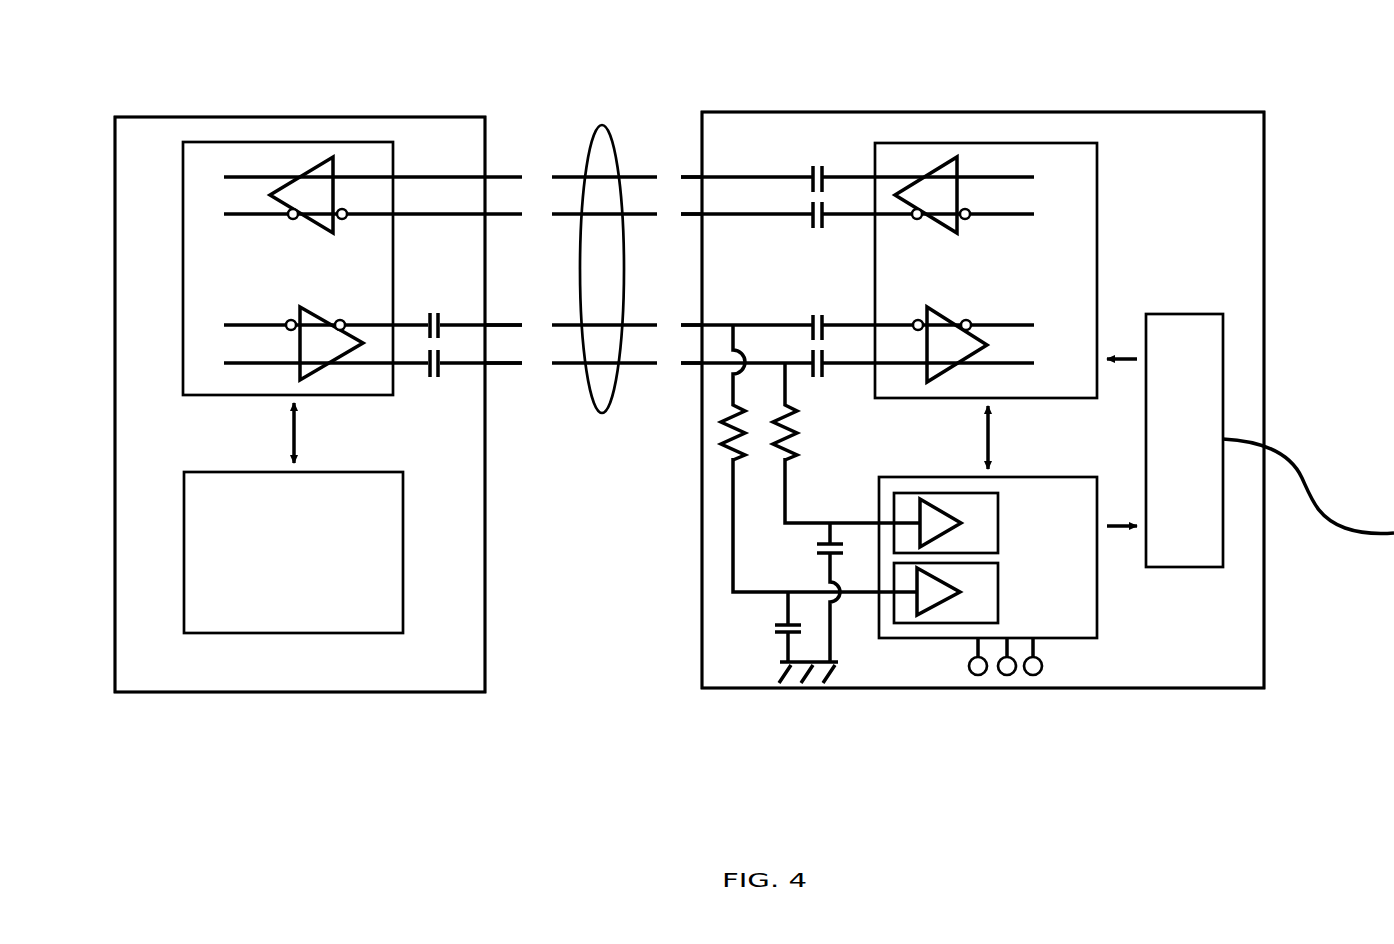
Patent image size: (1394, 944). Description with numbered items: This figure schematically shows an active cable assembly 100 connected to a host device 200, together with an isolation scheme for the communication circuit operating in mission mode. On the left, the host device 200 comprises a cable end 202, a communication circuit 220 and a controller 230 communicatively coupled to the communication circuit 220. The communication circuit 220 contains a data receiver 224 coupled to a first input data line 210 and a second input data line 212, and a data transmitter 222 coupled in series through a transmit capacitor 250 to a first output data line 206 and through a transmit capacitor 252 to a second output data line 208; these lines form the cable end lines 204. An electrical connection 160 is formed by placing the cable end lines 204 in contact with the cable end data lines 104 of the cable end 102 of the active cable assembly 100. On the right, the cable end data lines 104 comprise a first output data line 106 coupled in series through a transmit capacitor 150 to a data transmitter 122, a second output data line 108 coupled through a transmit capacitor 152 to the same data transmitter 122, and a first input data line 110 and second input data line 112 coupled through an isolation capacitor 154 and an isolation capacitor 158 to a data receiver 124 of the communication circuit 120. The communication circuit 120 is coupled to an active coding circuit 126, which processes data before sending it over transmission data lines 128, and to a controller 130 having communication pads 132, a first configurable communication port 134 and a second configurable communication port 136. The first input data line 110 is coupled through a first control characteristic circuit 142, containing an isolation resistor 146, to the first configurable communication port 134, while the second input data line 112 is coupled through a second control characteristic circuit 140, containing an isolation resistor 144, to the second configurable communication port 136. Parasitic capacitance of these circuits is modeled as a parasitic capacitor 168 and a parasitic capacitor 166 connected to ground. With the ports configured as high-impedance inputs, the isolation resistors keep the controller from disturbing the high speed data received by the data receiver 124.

The active cable assembly 100 is at (1306, 162).
The cable end 102 is at (1010, 112).
The cable end data lines 104 is at (684, 152).
The first output data line 106 is at (723, 173).
The second output data line 108 is at (726, 222).
The first input data line 110 is at (718, 321).
The second input data line 112 is at (757, 358).
The communication circuit 120 is at (986, 270).
The data transmitter 122 is at (932, 226).
The data receiver 124 is at (950, 315).
The active coding circuit 126 is at (1184, 440).
The transmission data lines 128 is at (1300, 462).
The controller 130 is at (988, 557).
The communication pads 132 is at (1056, 668).
The first configurable communication port 134 is at (998, 595).
The second configurable communication port 136 is at (998, 521).
The second control characteristic circuit 140 is at (800, 492).
The first control characteristic circuit 142 is at (720, 508).
The isolation resistor 144 is at (798, 430).
The isolation resistor 146 is at (720, 441).
The transmit capacitor 150 is at (821, 164).
The transmit capacitor 152 is at (824, 230).
The isolation capacitor 154 is at (822, 313).
The isolation capacitor 158 is at (826, 380).
The electrical connection 160 is at (598, 122).
The parasitic capacitor 166 is at (817, 548).
The parasitic capacitor 168 is at (775, 634).
The host device 200 is at (113, 86).
The cable end 202 is at (232, 116).
The cable end lines 204 is at (509, 426).
The first output data line 206 is at (493, 320).
The second output data line 208 is at (495, 370).
The first input data line 210 is at (437, 174).
The second input data line 212 is at (434, 220).
The communication circuit 220 is at (288, 268).
The data transmitter 222 is at (324, 316).
The data receiver 224 is at (306, 228).
The controller 230 is at (293, 552).
The transmit capacitor 250 is at (432, 312).
The transmit capacitor 252 is at (430, 380).